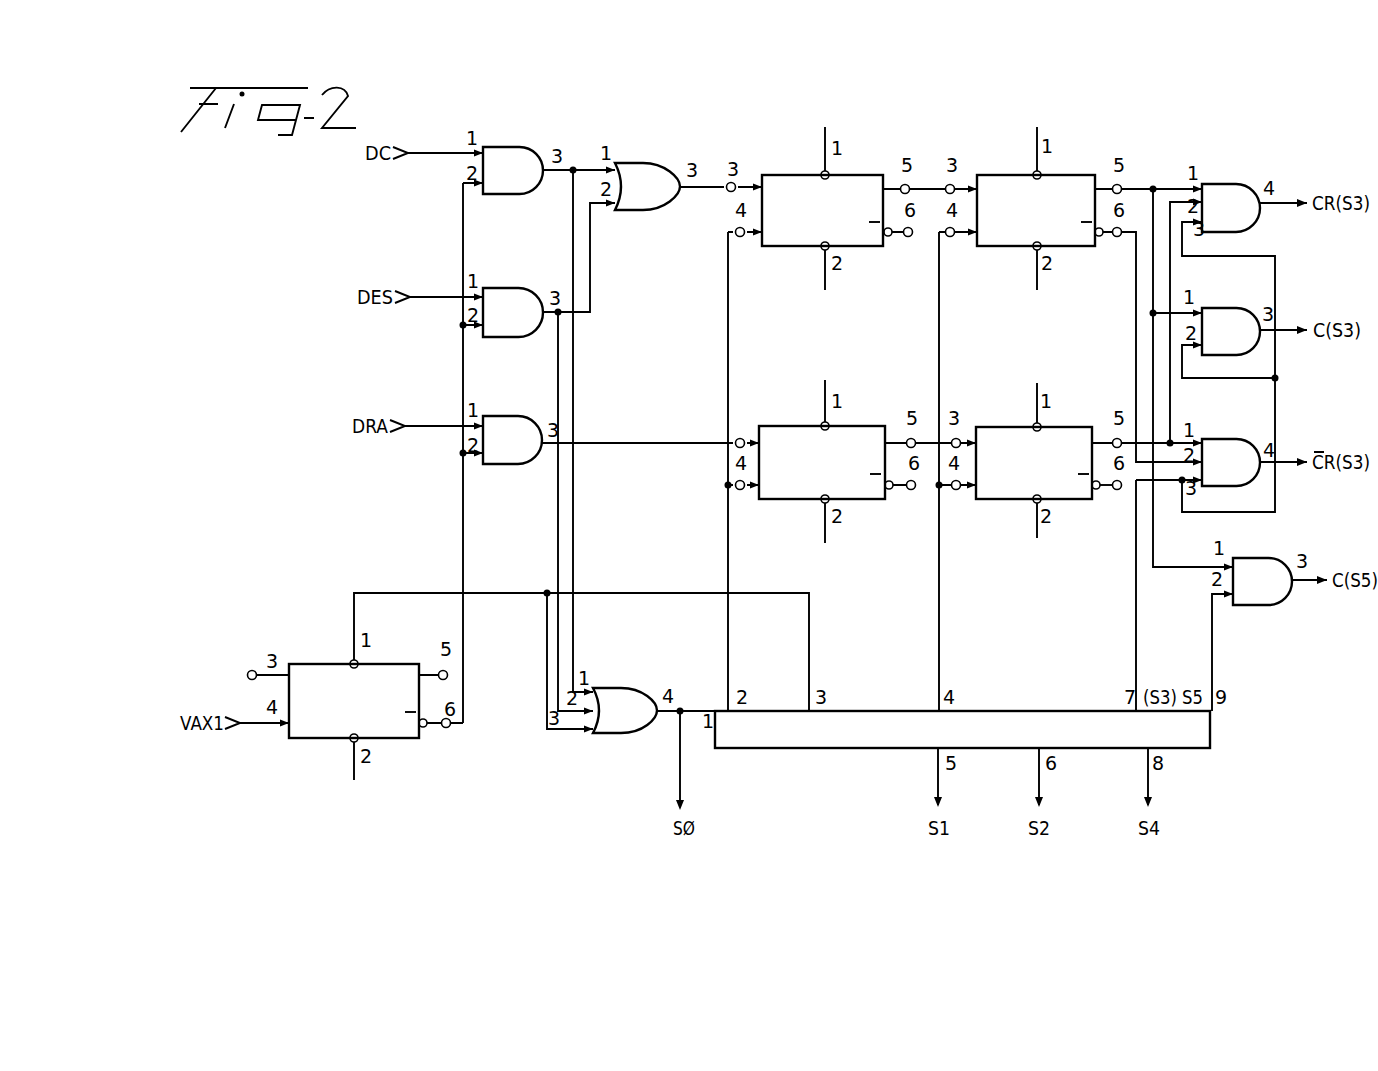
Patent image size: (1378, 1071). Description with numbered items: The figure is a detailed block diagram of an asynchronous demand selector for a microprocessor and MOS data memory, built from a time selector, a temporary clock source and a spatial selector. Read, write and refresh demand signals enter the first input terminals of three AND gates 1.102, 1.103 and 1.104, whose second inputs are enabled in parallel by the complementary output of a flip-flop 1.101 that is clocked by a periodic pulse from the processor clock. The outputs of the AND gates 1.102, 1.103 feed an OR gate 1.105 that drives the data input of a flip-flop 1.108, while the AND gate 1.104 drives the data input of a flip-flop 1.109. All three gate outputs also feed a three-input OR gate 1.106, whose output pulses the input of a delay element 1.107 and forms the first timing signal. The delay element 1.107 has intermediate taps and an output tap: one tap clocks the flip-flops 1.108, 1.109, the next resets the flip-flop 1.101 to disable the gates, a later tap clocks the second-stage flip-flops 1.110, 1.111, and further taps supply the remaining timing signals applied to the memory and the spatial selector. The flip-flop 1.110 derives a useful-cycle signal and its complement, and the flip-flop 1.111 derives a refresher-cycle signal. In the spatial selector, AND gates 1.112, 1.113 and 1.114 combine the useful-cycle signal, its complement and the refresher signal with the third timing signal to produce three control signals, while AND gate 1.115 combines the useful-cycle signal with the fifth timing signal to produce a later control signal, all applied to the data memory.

The flip-flop 1.101 is at (313, 677).
The AND gate 1.102 is at (515, 160).
The AND gate 1.103 is at (504, 298).
The AND gate 1.104 is at (500, 430).
The OR gate 1.105 is at (636, 168).
The OR gate 1.106 is at (616, 700).
The delay element 1.107 is at (822, 735).
The flip-flop 1.108 is at (789, 186).
The flip-flop 1.109 is at (794, 438).
The flip-flop 1.110 is at (1003, 186).
The flip-flop 1.111 is at (1010, 450).
The AND gate 1.112 is at (1224, 197).
The AND gate 1.113 is at (1224, 327).
The AND gate 1.114 is at (1222, 452).
The AND gate 1.115 is at (1255, 572).